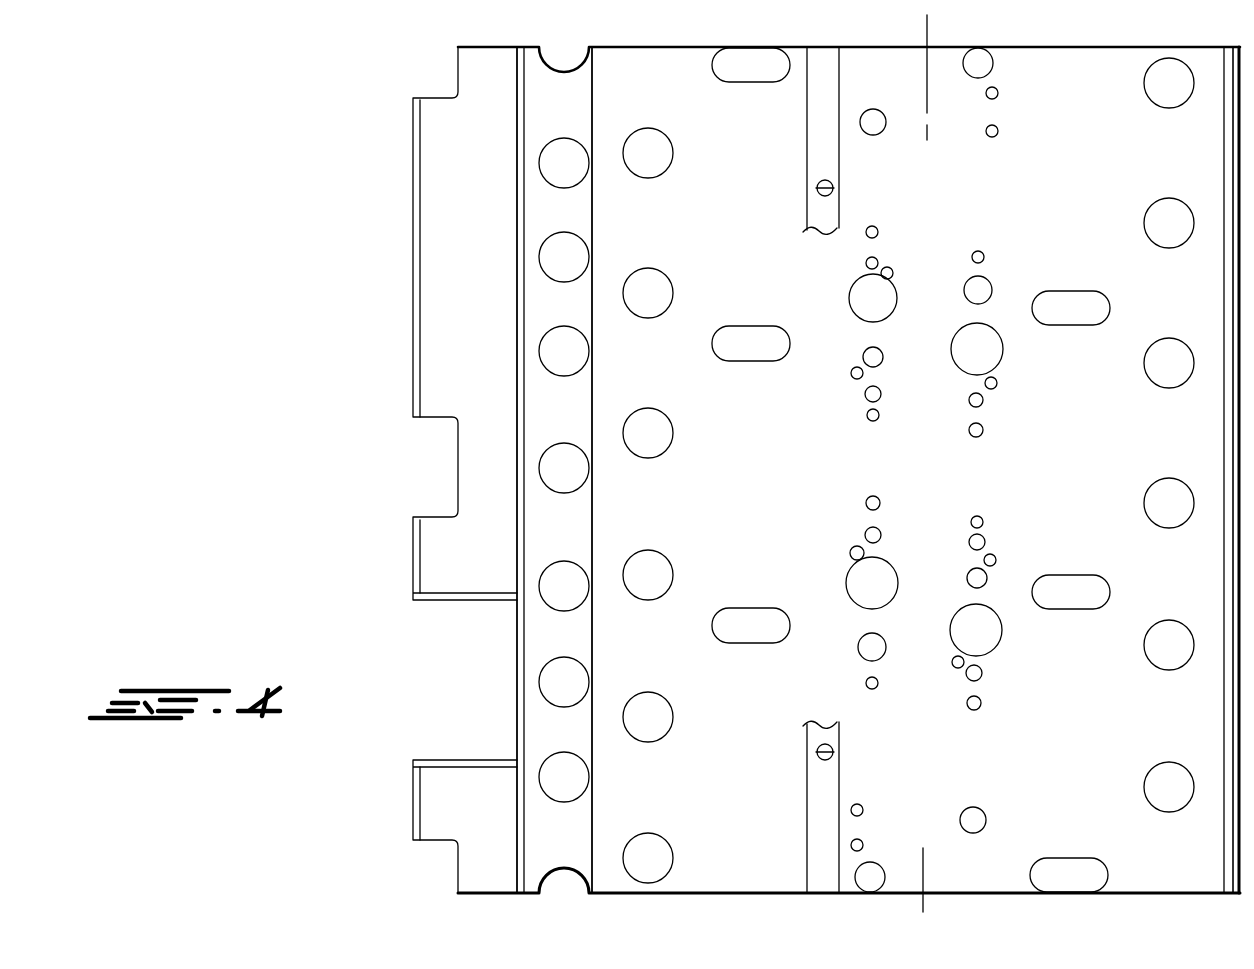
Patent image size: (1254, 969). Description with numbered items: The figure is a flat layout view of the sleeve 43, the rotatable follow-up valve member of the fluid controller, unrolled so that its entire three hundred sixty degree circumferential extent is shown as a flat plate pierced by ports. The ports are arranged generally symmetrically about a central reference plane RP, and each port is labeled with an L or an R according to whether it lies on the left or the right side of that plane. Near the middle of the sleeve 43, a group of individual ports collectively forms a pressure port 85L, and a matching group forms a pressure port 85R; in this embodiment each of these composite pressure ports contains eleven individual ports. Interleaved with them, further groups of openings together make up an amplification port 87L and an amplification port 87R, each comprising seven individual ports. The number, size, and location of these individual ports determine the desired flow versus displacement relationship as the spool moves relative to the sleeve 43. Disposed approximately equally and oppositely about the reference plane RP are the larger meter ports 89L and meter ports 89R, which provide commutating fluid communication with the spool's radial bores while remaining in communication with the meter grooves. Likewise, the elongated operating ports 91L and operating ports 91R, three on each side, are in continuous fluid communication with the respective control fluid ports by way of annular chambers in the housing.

The follow-up valve member (sleeve) 43 is at (618, 46).
The reference plane RP is at (930, 34).
The pressure port 85L is at (850, 228).
The pressure port 85R is at (1013, 50).
The amplification port 87L is at (873, 120).
The amplification port 87R is at (1000, 240).
The meter ports 89L is at (650, 285).
The meter ports 89R is at (1153, 218).
The operating ports 91L is at (743, 352).
The operating ports 91R is at (1077, 585).